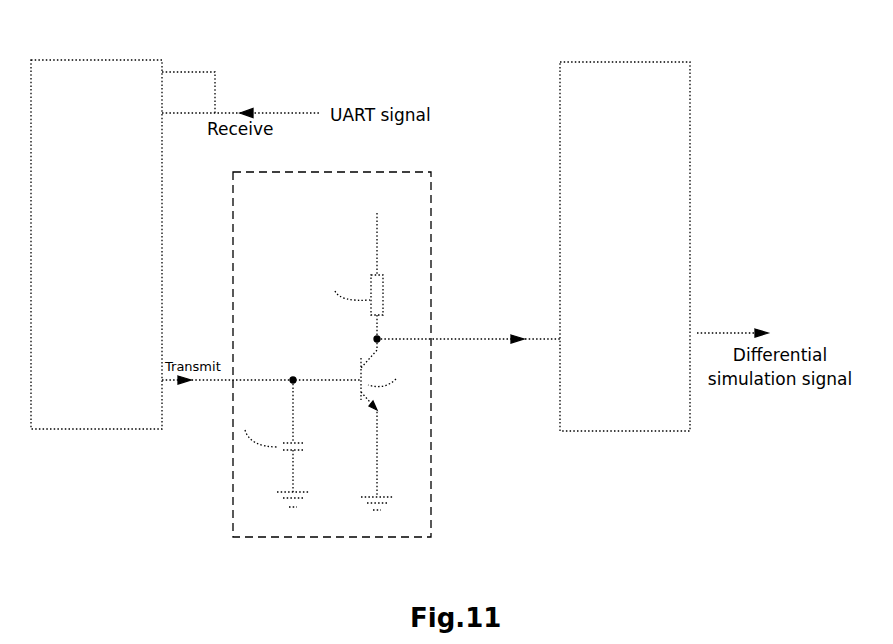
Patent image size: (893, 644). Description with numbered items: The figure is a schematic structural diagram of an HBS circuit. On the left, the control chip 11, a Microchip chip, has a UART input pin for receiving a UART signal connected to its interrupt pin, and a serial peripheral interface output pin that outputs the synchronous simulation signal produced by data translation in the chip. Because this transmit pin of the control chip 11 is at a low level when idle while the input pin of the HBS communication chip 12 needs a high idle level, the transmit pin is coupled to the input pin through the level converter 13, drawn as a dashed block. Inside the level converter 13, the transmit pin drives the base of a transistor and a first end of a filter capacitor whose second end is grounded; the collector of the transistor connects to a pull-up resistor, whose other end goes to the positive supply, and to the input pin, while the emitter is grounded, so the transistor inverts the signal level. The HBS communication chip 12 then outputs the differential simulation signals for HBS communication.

The control chip 11 is at (100, 60).
The HBS communication chip 12 is at (625, 62).
The level converter 13 is at (431, 172).